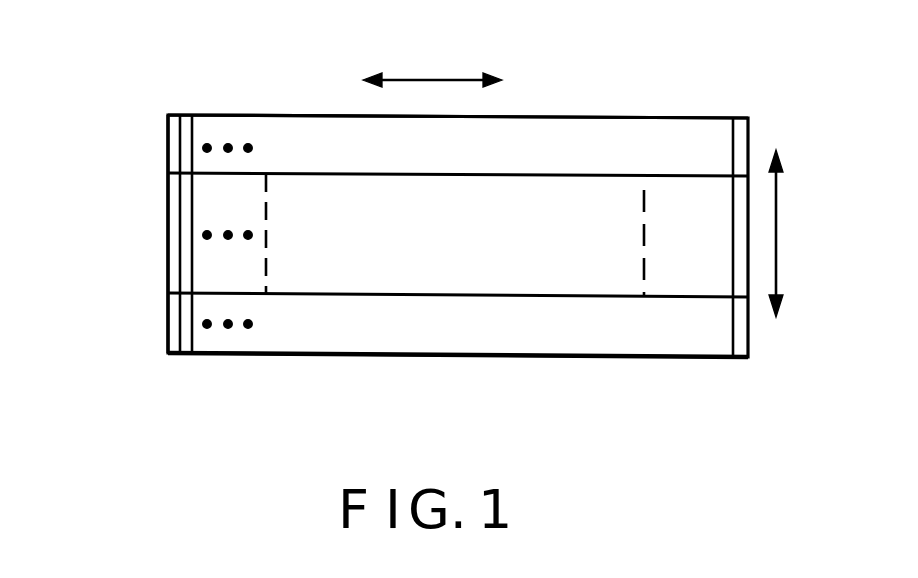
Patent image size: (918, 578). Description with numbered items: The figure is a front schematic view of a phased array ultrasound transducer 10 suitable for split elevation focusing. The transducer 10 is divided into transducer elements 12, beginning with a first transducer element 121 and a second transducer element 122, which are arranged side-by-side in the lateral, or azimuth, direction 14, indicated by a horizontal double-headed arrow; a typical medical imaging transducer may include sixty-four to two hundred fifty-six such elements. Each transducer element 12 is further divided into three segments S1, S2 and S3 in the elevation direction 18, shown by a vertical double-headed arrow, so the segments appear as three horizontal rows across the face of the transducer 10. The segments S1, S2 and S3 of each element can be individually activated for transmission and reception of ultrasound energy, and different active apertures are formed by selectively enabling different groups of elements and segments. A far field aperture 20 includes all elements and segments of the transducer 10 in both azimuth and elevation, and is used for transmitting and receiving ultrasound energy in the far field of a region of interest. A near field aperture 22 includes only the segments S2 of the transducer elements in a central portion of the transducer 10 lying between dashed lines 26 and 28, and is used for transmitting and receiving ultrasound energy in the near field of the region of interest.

The phased array ultrasound transducer 10 is at (258, 58).
The transducer element 12 is at (738, 358).
The first transducer element 121 is at (172, 356).
The second transducer element 122 is at (185, 356).
The lateral direction 14 is at (426, 78).
The elevation direction 18 is at (778, 235).
The far field aperture 20 is at (618, 117).
The near field aperture 22 is at (423, 175).
The dashed line 26 is at (268, 235).
The dashed line 28 is at (644, 240).
The segment S1 is at (168, 322).
The segment S2 is at (168, 236).
The segment S3 is at (168, 147).